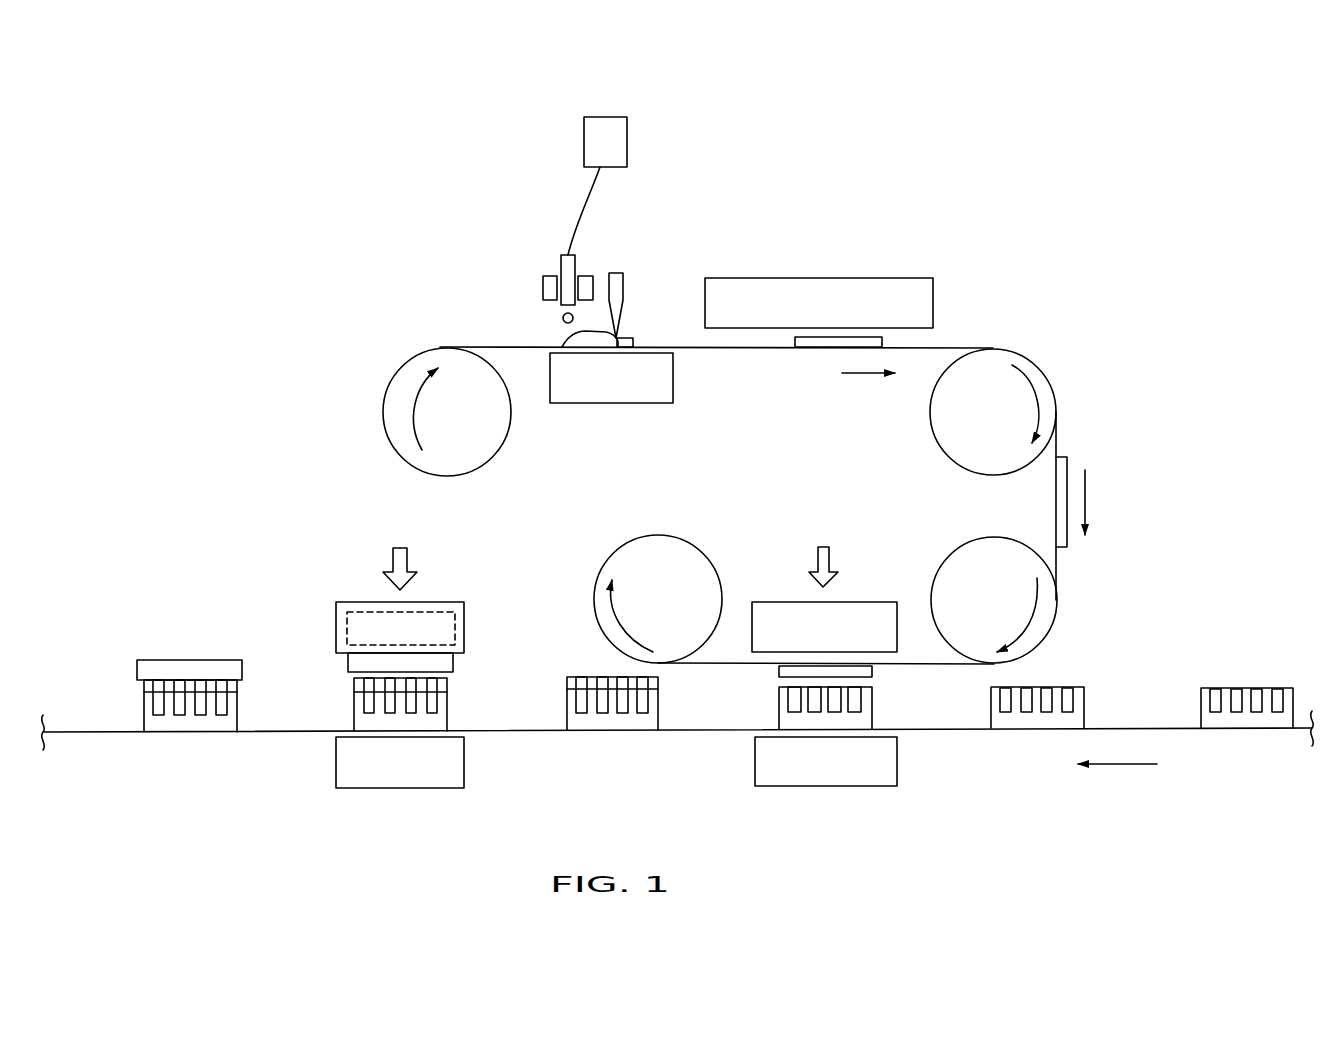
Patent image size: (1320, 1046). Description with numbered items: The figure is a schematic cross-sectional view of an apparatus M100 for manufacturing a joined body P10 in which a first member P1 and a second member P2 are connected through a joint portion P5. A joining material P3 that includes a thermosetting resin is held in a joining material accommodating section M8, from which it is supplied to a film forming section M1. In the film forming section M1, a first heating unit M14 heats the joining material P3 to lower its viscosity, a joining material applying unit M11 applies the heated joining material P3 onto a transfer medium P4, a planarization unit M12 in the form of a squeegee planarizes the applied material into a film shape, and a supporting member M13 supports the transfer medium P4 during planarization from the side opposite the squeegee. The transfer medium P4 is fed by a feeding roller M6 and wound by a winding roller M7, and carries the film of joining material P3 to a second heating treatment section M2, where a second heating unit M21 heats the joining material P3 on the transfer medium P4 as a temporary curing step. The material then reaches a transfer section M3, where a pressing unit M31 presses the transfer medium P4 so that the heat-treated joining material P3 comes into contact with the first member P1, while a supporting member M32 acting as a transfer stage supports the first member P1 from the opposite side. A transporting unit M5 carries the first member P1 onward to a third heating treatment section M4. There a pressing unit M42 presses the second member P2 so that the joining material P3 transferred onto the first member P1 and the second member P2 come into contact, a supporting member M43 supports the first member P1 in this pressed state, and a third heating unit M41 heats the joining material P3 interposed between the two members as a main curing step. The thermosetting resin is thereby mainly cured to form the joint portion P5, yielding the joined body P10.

The apparatus of manufacturing the joined body M100 is at (1003, 172).
The film forming section M1 is at (557, 220).
The joining material applying unit M11 is at (565, 272).
The planarization unit M12 is at (617, 303).
The supporting member M13 is at (583, 405).
The first heating unit M14 is at (588, 274).
The joining material accommodating section M8 is at (621, 110).
The second heating treatment section M2 is at (845, 232).
The second heating unit M21 is at (745, 288).
The transfer section M3 is at (795, 535).
The pressing unit M31 is at (880, 612).
The supporting member M32 is at (880, 770).
The third heating treatment section M4 is at (358, 574).
The third heating unit M41 is at (426, 628).
The pressing unit M42 is at (464, 618).
The supporting member M43 is at (360, 778).
The transporting unit M5 is at (1150, 727).
The feeding roller M6 is at (383, 412).
The winding roller M7 is at (652, 552).
The first member P1 is at (148, 722).
The second member P2 is at (145, 672).
The joining material P3 is at (563, 318).
The transfer medium P4 is at (480, 348).
The joint portion P5 is at (145, 692).
The joined body P10 is at (196, 637).